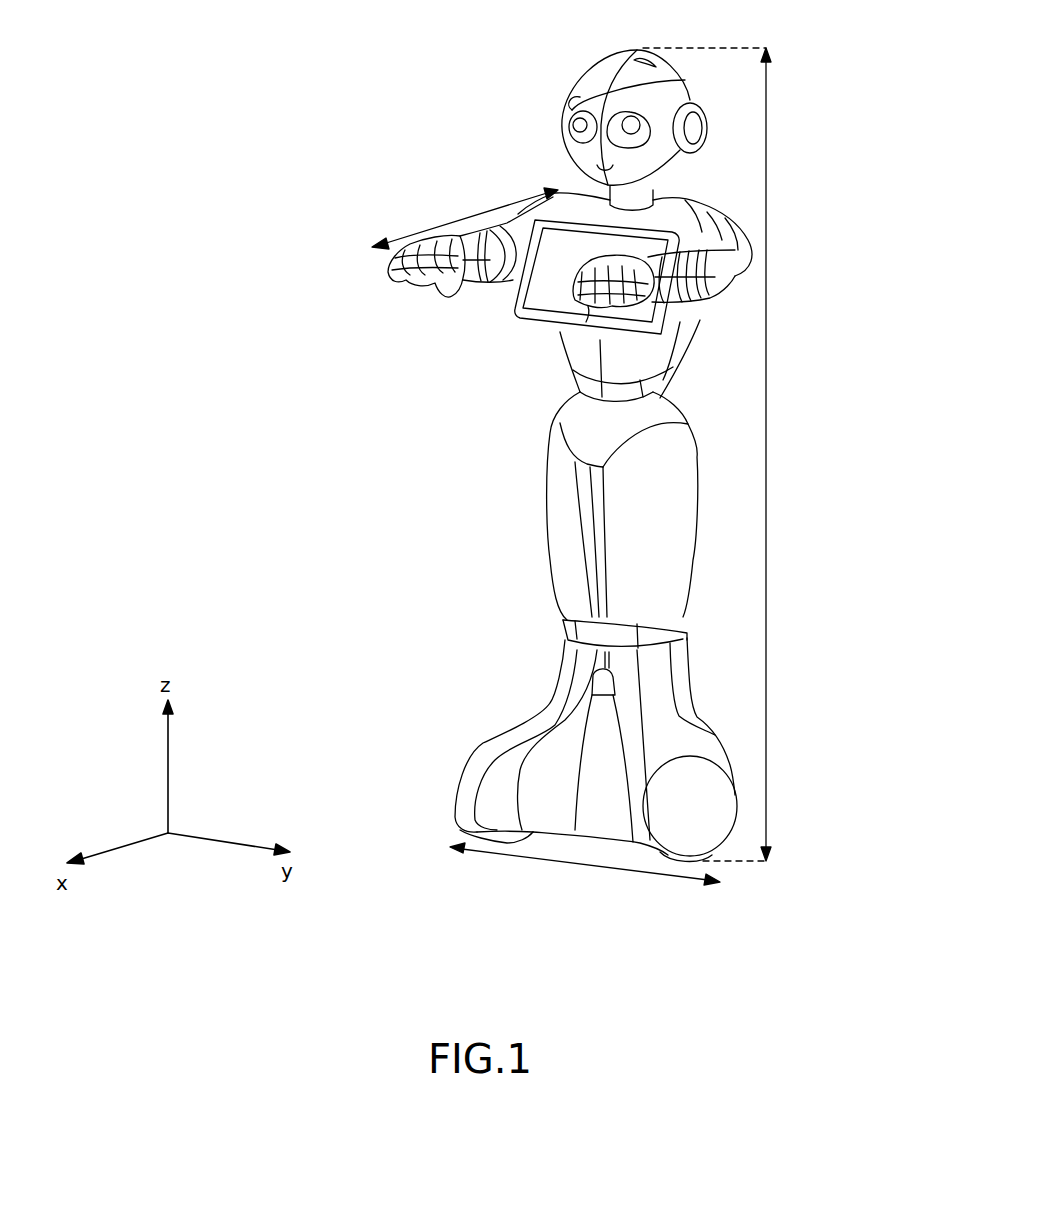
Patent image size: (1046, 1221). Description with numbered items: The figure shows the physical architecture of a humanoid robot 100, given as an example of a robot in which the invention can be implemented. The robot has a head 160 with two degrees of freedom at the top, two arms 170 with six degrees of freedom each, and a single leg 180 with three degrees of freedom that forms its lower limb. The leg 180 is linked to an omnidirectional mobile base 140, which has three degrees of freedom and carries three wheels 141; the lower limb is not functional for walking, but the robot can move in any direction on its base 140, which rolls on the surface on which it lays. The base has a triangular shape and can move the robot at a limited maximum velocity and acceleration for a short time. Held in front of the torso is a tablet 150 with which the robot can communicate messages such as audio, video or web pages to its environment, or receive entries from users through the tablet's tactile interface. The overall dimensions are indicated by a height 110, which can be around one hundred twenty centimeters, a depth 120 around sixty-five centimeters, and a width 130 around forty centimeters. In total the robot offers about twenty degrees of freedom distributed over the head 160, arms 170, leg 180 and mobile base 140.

The robot 100 is at (262, 225).
The height 110 is at (766, 428).
The depth 120 is at (475, 215).
The width 130 is at (550, 858).
The mobile base 140 is at (470, 760).
The wheels 141 is at (500, 833).
The tablet 150 is at (507, 325).
The head 160 is at (578, 103).
The arms 170 is at (745, 243).
The leg 180 is at (550, 543).